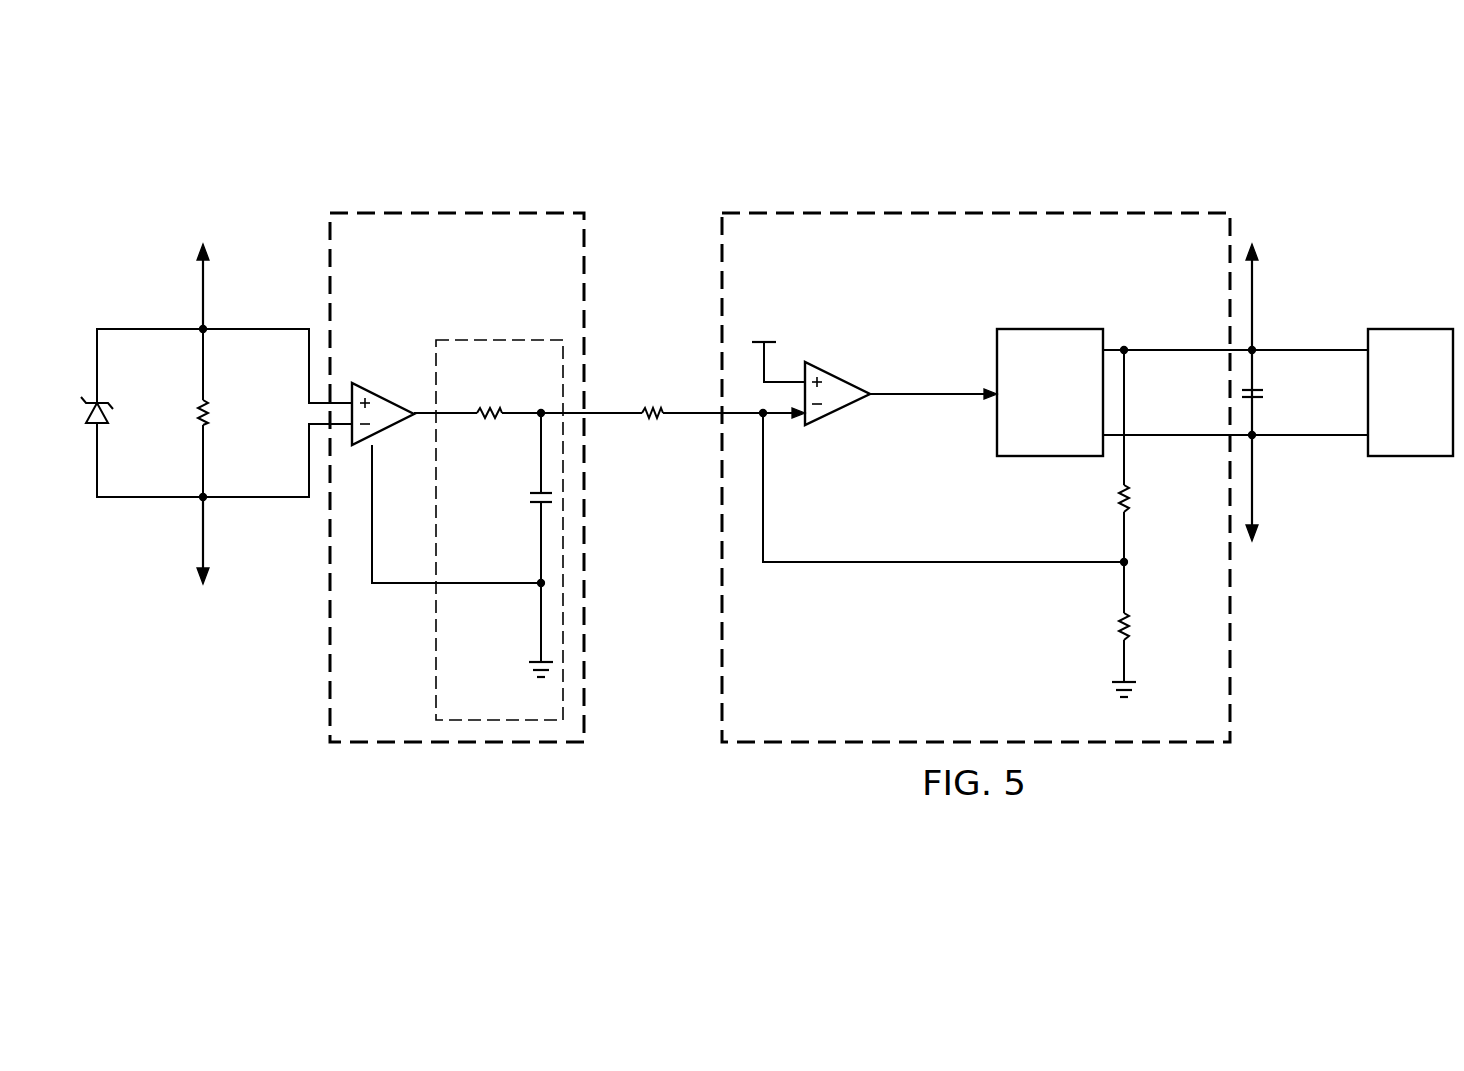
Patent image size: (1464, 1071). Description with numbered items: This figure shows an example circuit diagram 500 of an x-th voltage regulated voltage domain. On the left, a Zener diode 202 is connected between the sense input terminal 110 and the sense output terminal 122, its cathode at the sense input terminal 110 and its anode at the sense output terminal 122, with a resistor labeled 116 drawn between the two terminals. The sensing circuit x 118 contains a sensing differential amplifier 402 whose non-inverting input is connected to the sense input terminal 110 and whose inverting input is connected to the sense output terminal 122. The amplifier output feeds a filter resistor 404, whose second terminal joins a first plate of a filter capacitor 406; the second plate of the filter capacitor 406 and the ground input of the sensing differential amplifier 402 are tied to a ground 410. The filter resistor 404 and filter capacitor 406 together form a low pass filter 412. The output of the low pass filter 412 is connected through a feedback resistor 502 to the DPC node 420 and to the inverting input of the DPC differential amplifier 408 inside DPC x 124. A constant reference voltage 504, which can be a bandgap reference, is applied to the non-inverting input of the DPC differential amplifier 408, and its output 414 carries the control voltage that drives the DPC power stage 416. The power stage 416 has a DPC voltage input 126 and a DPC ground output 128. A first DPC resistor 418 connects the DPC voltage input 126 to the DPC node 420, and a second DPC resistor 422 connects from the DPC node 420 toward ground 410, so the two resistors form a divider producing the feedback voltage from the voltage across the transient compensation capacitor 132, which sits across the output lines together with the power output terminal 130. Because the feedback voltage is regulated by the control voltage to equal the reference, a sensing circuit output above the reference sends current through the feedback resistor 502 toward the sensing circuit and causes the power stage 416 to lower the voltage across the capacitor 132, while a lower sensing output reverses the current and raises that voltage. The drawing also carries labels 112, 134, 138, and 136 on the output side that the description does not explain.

The circuit diagram 500 is at (655, 166).
The sense input terminal 110 is at (200, 327).
The sense output terminal 122 is at (198, 500).
The sense resistor Rx 116 is at (212, 411).
The Zener diode 202 is at (104, 413).
The sensing circuit x 118 is at (376, 200).
The low pass filter 412 is at (458, 330).
The sensing differential amplifier 402 is at (411, 383).
The filter resistor 404 is at (502, 382).
The filter capacitor 406 is at (528, 496).
The ground 410 is at (1160, 705).
The feedback resistor 502 is at (648, 407).
The DPC x 124 is at (1032, 200).
The constant reference voltage 504 is at (785, 382).
The DPC differential amplifier 408 is at (847, 410).
The output of the DPC differential amplifier 414 is at (934, 400).
The DPC power stage 416 is at (1050, 328).
The DPC voltage input 126 is at (1177, 348).
The DPC ground output 128 is at (1177, 433).
The first DPC resistor 418 is at (1131, 500).
The DPC node 420 is at (1128, 566).
The second DPC resistor 422 is at (1131, 628).
The first output terminal 112 is at (1255, 348).
The power output terminal 130 is at (1256, 438).
The transient compensation capacitor 132 is at (1266, 393).
The first load connection 134 is at (1347, 349).
The second load connection 138 is at (1347, 437).
The load 136 is at (1408, 328).